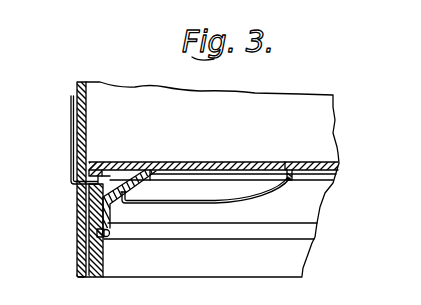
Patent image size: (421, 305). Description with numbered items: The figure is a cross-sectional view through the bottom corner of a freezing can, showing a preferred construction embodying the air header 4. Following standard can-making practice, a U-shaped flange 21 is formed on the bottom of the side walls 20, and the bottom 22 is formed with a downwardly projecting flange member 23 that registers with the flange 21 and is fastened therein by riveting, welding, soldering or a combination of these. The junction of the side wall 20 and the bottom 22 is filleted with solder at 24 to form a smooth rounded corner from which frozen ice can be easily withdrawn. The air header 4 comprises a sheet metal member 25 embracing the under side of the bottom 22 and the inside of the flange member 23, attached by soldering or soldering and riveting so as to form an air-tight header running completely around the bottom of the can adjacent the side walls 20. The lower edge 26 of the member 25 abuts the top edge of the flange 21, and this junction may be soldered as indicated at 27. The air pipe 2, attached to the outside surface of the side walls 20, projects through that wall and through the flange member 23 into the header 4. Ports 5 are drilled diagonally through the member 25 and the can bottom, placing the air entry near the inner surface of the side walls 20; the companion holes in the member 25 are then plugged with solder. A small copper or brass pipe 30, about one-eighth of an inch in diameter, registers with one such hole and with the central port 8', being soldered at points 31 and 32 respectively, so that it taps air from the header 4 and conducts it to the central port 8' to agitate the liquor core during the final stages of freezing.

The air pipe 2 is at (72, 124).
The air header 4 is at (127, 163).
The ports 5 is at (100, 164).
The central port 8' is at (295, 149).
The side walls 20 is at (77, 88).
The U-shaped flange 21 is at (87, 278).
The bottom 22 is at (197, 163).
The flange member 23 is at (97, 223).
The solder fillet 24 is at (87, 162).
The sheet metal member 25 is at (112, 200).
The lower edge 26 is at (110, 228).
The solder junction 27 is at (105, 231).
The pipe 30 is at (218, 203).
The soldering point 31 is at (126, 193).
The soldering point 32 is at (292, 180).